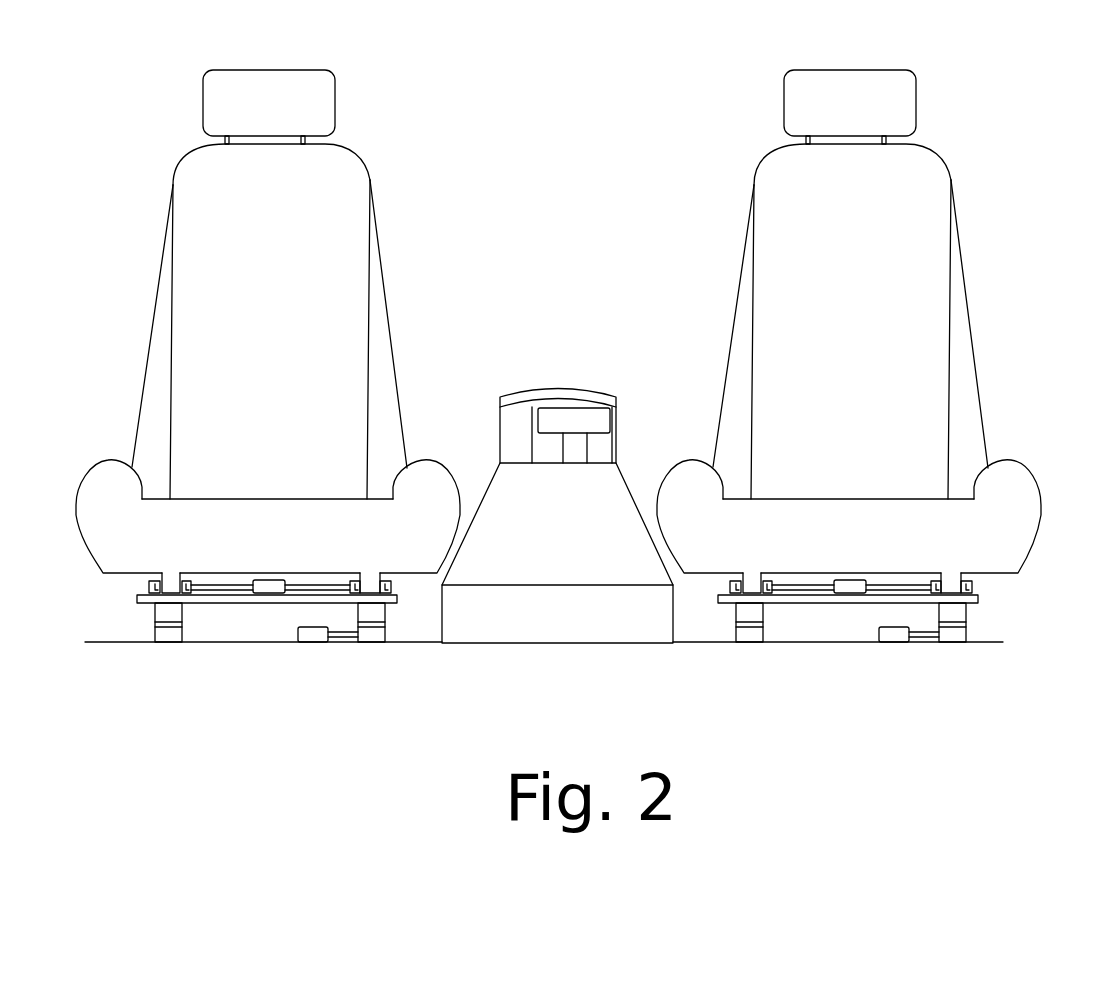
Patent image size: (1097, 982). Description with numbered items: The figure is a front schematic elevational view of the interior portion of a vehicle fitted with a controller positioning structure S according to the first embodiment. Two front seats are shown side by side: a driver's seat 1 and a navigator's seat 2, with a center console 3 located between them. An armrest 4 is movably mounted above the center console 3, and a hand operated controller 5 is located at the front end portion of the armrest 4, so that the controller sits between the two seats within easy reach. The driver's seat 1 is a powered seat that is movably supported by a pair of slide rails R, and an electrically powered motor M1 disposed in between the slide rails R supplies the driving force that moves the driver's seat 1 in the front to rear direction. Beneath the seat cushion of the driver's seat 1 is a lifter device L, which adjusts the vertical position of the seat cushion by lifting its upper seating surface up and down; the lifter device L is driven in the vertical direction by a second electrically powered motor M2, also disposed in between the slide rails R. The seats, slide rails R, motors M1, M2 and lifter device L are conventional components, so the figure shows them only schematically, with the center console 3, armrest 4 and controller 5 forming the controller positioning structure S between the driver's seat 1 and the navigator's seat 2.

The driver's seat 1 is at (380, 258).
The navigator's seat 2 is at (740, 278).
The center console 3 is at (497, 473).
The armrest 4 is at (547, 387).
The hand operated controller 5 is at (608, 427).
The controller positioning structure S is at (642, 377).
The slide rails R is at (146, 585).
The lifter device L is at (390, 648).
The electrically powered motor M1 is at (268, 595).
The electrically powered motor M2 is at (313, 643).